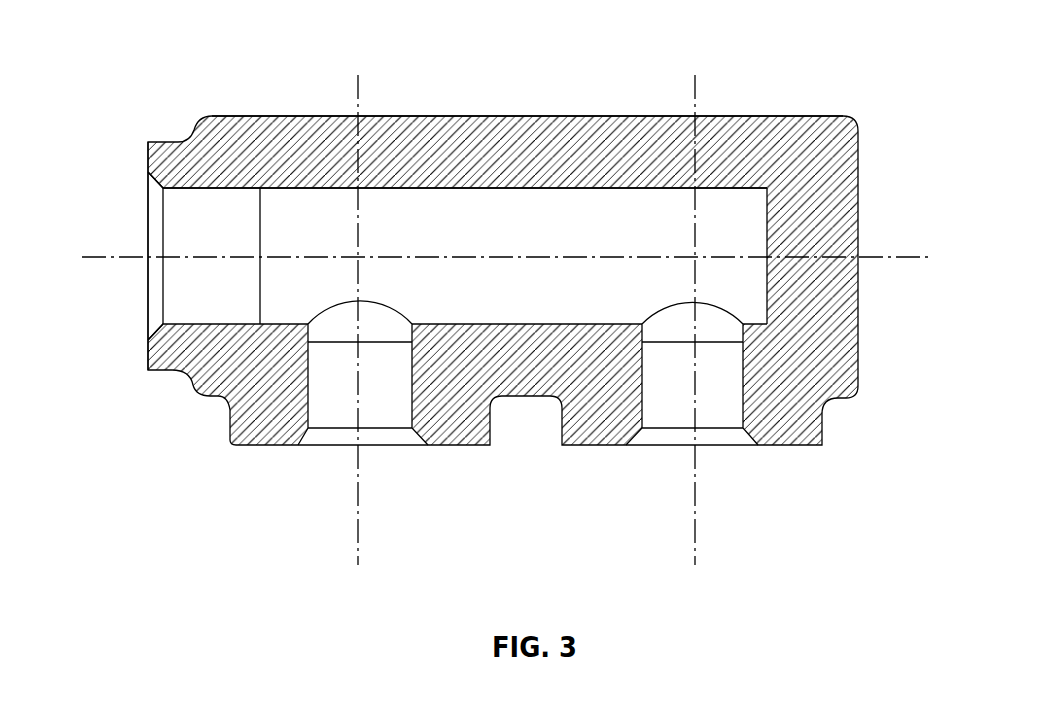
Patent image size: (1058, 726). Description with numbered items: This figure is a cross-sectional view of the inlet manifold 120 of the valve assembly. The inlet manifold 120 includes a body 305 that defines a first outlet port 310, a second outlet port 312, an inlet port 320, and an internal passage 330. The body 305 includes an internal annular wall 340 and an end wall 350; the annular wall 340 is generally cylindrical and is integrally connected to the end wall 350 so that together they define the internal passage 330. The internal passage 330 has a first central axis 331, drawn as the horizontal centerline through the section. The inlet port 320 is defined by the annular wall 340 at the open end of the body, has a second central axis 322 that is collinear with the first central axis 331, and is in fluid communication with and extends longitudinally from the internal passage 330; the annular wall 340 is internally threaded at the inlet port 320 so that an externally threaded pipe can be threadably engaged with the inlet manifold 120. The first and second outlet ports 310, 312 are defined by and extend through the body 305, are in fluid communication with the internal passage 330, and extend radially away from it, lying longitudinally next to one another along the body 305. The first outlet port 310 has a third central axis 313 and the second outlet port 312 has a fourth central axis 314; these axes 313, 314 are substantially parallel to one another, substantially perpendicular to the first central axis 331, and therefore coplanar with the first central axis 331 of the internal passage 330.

The inlet manifold 120 is at (153, 61).
The body 305 is at (310, 150).
The first central axis 331 is at (535, 250).
The internal annular wall 340 is at (637, 188).
The internal passage 330 is at (620, 243).
The inlet port 320 is at (133, 239).
The second central axis 322 is at (205, 258).
The end wall 350 is at (770, 277).
The first outlet port 310 is at (345, 403).
The third central axis 313 is at (357, 406).
The second outlet port 312 is at (677, 403).
The fourth central axis 314 is at (692, 406).